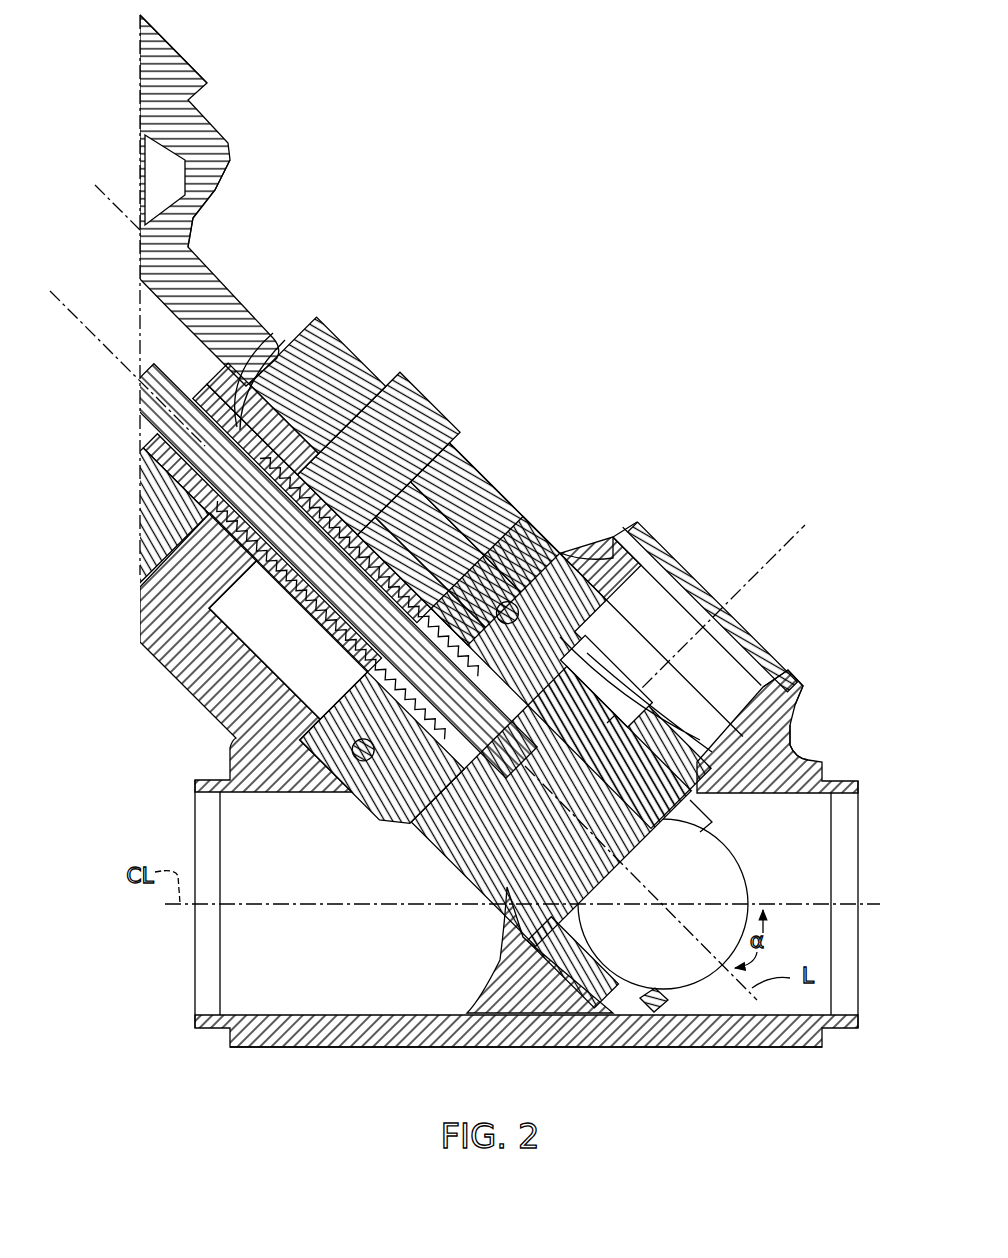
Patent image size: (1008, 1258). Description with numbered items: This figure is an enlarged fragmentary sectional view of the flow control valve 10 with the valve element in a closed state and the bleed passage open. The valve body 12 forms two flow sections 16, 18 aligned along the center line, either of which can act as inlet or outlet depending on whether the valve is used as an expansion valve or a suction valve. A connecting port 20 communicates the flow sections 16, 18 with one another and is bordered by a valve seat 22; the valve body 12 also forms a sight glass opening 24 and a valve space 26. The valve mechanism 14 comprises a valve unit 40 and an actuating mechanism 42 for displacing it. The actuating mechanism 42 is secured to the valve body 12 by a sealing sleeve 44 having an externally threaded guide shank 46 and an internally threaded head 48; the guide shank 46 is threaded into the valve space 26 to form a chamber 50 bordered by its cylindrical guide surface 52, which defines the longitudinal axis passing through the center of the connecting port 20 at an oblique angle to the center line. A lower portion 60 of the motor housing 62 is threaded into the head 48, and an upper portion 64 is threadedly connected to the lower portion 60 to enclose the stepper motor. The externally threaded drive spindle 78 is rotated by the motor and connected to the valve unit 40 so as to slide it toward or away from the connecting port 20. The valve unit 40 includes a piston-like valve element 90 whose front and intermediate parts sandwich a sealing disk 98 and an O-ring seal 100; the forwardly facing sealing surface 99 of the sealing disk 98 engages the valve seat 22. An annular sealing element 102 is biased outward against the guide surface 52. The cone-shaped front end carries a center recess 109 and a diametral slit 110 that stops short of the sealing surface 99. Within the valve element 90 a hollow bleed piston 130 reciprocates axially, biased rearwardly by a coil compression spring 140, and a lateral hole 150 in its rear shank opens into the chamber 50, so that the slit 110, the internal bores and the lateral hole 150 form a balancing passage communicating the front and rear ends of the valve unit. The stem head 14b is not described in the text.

The flow control valve 10 is at (490, 305).
The valve body 12 is at (625, 525).
The valve mechanism 14 is at (262, 315).
The stem head 14b is at (300, 340).
The flow section 16 is at (203, 983).
The flow section 18 is at (800, 1015).
The connecting port 20 is at (565, 948).
The valve seat 22 is at (517, 957).
The sight glass opening 24 is at (780, 650).
The valve space 26 is at (500, 495).
The valve unit 40 is at (410, 823).
The actuating mechanism 42 is at (220, 188).
The sealing sleeve 44 is at (345, 345).
The guide shank 46 is at (450, 455).
The head 48 is at (380, 365).
The chamber 50 is at (425, 440).
The cylindrical guide surface 52 is at (250, 650).
The lower portion 60 is at (150, 510).
The motor housing 62 is at (195, 250).
The upper portion 64 is at (180, 60).
The drive spindle 78 is at (170, 452).
The valve element 90 is at (467, 903).
The sealing disk 98 is at (772, 745).
The sealing surface 99 is at (700, 827).
The O-ring seal 100 is at (688, 742).
The sealing element 102 is at (533, 533).
The center recess 109 is at (708, 970).
The slit 110 is at (730, 873).
The bleed piston 130 is at (272, 582).
The coil compression spring 140 is at (480, 888).
The lateral hole 150 is at (337, 653).